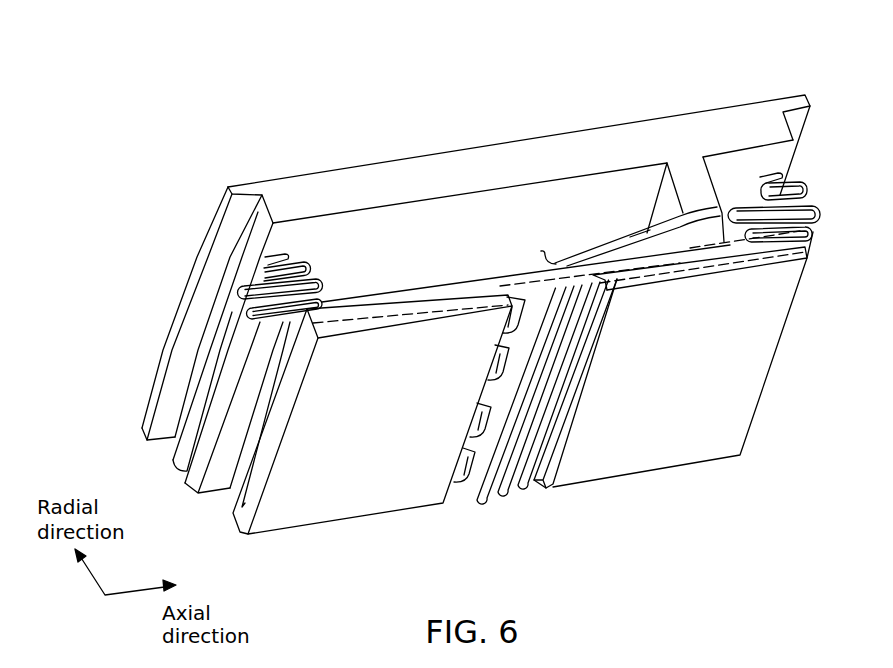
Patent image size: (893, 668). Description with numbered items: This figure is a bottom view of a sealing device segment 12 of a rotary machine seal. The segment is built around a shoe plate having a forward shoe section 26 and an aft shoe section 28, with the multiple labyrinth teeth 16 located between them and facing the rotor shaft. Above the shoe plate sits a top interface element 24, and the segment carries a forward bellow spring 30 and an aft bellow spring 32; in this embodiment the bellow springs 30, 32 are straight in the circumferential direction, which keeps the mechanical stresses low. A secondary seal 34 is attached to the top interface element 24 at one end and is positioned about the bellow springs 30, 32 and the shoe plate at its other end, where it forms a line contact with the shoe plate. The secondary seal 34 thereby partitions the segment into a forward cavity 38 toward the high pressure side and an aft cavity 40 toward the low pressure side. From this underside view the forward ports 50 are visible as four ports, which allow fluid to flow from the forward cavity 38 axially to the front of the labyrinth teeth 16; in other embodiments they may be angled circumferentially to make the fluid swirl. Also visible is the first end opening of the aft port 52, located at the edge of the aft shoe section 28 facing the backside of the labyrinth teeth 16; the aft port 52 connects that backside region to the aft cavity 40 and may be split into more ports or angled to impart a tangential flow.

The sealing device segment 12 is at (746, 61).
The labyrinth teeth 16 is at (522, 481).
The top interface element 24 is at (243, 184).
The forward shoe section 26 is at (342, 500).
The aft shoe section 28 is at (673, 447).
The forward bellow spring 30 is at (203, 405).
The aft bellow spring 32 is at (814, 236).
The secondary seal 34 is at (598, 250).
The forward cavity 38 is at (438, 248).
The aft cavity 40 is at (643, 244).
The forward ports 50 is at (470, 460).
The aft port 52 is at (586, 334).